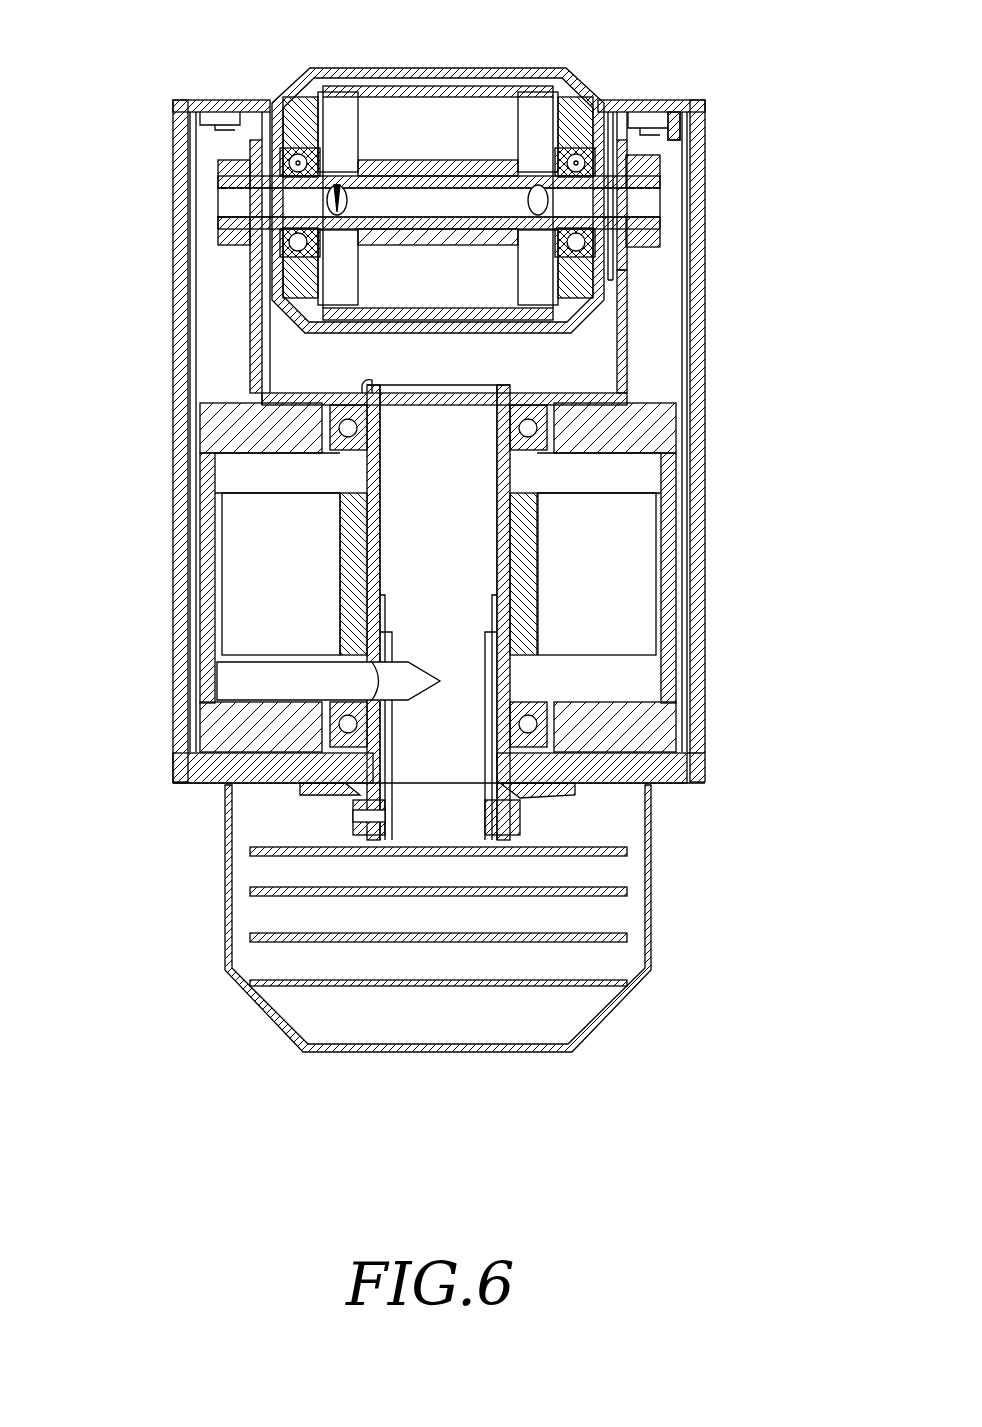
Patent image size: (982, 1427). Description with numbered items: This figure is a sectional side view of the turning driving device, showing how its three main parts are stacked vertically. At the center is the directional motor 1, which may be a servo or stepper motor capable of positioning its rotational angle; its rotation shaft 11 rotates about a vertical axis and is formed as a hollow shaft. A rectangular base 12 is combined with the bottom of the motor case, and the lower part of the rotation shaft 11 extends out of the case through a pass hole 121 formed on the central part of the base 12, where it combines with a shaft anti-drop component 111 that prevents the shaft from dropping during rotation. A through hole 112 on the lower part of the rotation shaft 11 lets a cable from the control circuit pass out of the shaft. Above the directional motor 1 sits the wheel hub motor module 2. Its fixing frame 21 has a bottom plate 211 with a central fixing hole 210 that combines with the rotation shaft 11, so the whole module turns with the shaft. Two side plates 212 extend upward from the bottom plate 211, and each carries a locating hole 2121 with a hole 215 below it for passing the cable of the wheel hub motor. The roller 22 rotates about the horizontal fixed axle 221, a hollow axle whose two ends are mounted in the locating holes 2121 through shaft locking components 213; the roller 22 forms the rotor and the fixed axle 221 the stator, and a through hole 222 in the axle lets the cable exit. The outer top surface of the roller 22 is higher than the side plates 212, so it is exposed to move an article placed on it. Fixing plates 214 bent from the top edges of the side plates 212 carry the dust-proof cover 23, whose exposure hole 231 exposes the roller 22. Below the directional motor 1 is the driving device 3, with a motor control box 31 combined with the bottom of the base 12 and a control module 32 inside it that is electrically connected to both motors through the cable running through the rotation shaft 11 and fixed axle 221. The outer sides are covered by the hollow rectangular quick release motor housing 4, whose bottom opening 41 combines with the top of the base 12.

The directional motor 1 is at (215, 438).
The rotation shaft 11 is at (503, 560).
The shaft anti-drop component 111 is at (360, 812).
The through hole 112 is at (400, 686).
The rectangular base 12 is at (660, 769).
The pass hole 121 is at (588, 784).
The wheel hub motor module 2 is at (476, 23).
The fixing frame 21 is at (247, 283).
The fixing hole 210 is at (368, 382).
The bottom plate 211 is at (305, 393).
The side plate 212 is at (622, 302).
The shaft locking component 213 is at (657, 167).
The locating hole 2121 is at (622, 142).
The fixing plate 214 is at (205, 108).
The hole 215 is at (622, 362).
The roller 22 is at (441, 70).
The fixed axle 221 is at (408, 195).
The through hole 222 is at (333, 193).
The dust-proof cover 23 is at (650, 115).
The exposure hole 231 is at (610, 98).
The driving device 3 is at (220, 900).
The motor control box 31 is at (650, 868).
The control module 32 is at (620, 901).
The quick release motor housing 4 is at (183, 515).
The opening 41 is at (197, 730).